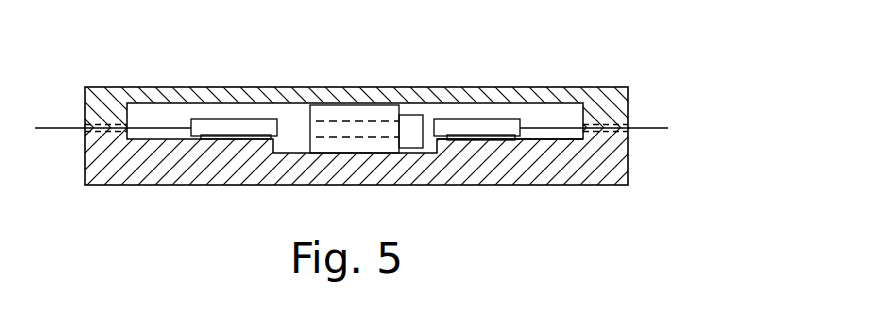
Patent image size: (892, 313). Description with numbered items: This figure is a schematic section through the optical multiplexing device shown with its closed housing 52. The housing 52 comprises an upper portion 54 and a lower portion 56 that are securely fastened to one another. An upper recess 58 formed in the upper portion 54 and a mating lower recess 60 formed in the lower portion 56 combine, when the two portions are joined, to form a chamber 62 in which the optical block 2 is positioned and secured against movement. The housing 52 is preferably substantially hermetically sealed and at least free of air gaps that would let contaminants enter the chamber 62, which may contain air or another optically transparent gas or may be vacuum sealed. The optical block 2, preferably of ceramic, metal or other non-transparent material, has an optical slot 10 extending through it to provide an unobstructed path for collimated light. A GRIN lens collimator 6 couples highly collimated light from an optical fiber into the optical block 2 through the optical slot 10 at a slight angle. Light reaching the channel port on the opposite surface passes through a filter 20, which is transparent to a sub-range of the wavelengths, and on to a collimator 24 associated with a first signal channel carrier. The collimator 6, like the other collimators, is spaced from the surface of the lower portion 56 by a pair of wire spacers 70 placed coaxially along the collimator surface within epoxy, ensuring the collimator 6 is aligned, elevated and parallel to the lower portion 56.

The optical block 2 is at (377, 102).
The GRIN lens collimator 6 is at (214, 127).
The optical slot 10 is at (325, 120).
The filter 20 is at (408, 122).
The collimator 24 is at (448, 123).
The housing 52 is at (400, 118).
The upper portion 54 is at (629, 97).
The lower portion 56 is at (629, 147).
The upper recess 58 is at (575, 104).
The lower recess 60 is at (558, 138).
The chamber 62 is at (513, 102).
The wire spacers 70 is at (238, 138).